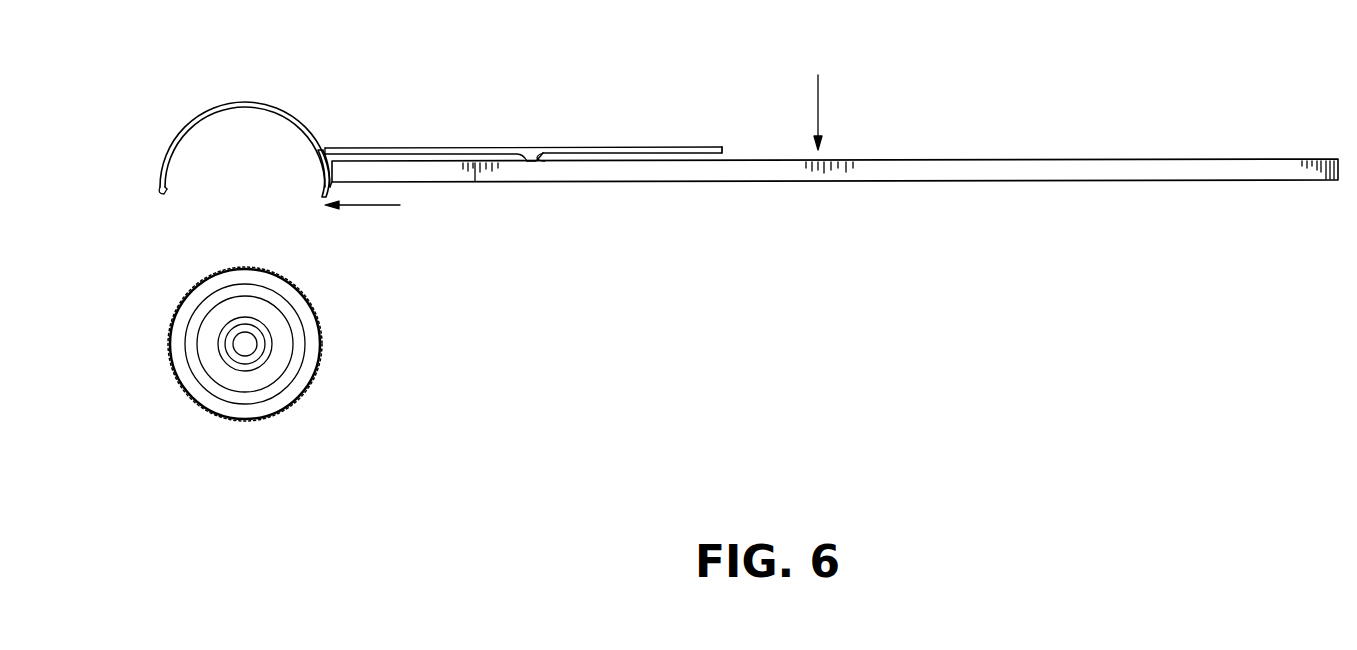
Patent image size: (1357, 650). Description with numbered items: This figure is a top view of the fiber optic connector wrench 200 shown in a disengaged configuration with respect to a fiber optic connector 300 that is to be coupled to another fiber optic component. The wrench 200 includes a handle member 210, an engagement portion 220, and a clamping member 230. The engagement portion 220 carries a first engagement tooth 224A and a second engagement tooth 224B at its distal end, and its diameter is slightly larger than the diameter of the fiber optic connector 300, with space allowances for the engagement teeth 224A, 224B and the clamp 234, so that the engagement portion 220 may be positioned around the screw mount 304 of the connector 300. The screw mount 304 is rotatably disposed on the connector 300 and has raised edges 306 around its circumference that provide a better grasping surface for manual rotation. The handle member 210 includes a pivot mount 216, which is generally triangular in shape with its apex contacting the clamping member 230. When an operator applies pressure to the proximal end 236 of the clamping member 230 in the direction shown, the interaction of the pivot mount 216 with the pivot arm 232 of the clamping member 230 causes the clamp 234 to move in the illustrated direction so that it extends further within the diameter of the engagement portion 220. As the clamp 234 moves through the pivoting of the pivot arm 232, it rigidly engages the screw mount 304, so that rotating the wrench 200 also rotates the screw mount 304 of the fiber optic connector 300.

The fiber optic connector wrench 200 is at (905, 138).
The handle member 210 is at (920, 181).
The pivot mount 216 is at (545, 151).
The engagement portion 220 is at (273, 102).
The first engagement tooth 224A is at (166, 192).
The second engagement tooth 224B is at (172, 180).
The clamping member 230 is at (441, 140).
The pivot arm 232 is at (632, 147).
The clamp 234 is at (320, 178).
The proximal end 236 is at (722, 147).
The fiber optic connector 300 is at (249, 426).
The screw mount 304 is at (300, 291).
The raised edges 306 is at (177, 312).